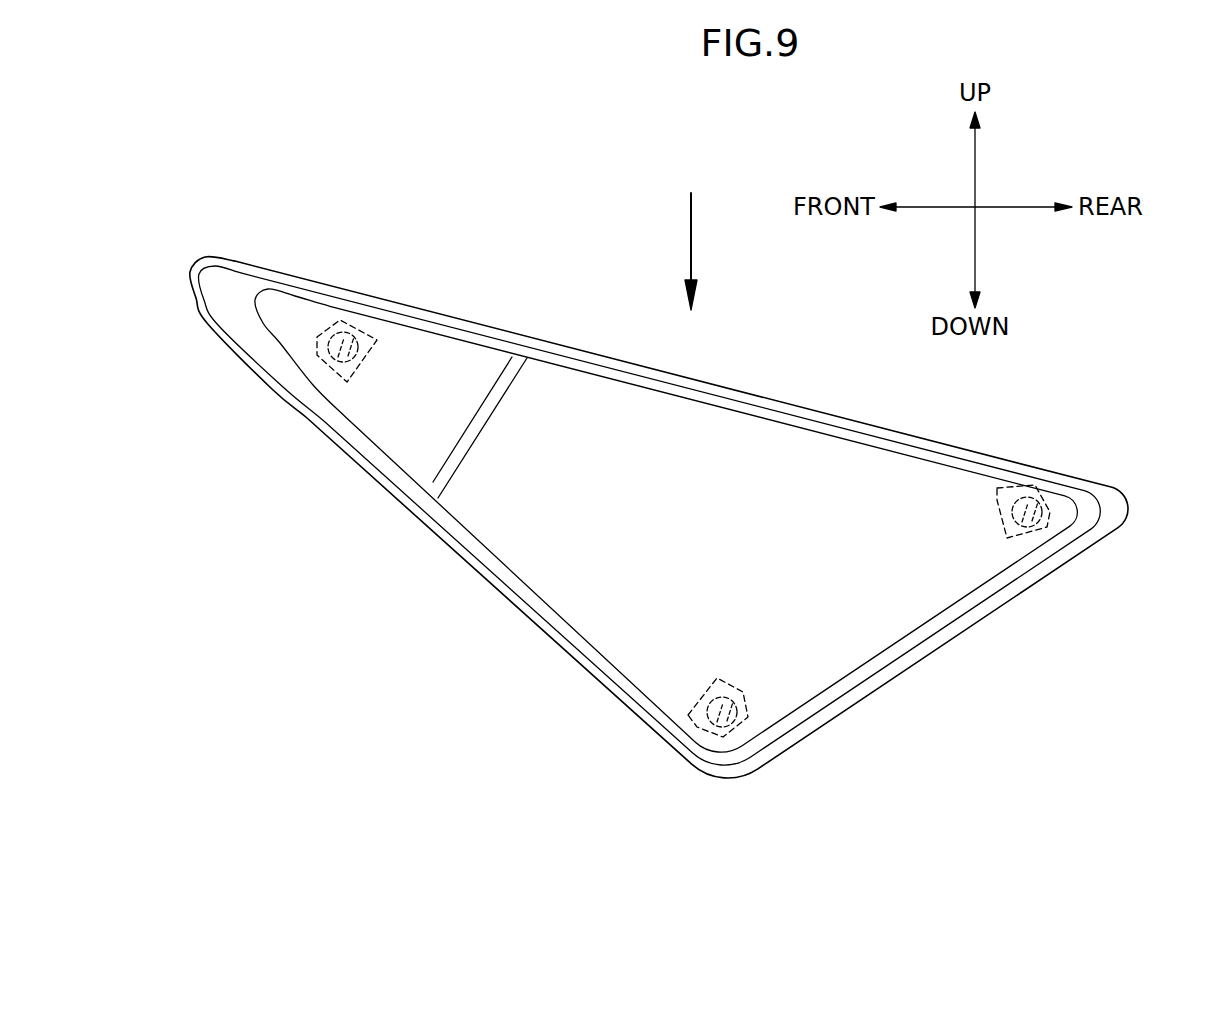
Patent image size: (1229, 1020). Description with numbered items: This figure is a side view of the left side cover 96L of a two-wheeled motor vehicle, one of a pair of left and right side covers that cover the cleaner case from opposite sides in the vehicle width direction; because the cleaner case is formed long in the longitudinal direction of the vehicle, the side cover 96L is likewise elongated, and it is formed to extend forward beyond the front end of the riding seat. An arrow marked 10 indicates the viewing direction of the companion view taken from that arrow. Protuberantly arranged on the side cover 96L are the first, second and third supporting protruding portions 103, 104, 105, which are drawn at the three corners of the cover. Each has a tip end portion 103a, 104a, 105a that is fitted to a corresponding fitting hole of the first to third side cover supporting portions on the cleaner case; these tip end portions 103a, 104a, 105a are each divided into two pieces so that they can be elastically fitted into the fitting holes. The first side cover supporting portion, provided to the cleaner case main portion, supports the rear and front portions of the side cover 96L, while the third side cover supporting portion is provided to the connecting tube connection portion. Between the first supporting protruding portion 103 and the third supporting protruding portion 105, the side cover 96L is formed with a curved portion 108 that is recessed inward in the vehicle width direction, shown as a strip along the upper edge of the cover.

The vehicle 10 is at (694, 229).
The left side cover 96L is at (518, 544).
The first supporting protruding portion 103 is at (1020, 485).
The tip end portion of first supporting protruding portion 103a is at (1040, 508).
The second supporting protruding portion 104 is at (750, 713).
The tip end portion of second supporting protruding portion 104a is at (717, 698).
The third supporting protruding portion 105 is at (327, 368).
The tip end portion of third supporting protruding portion 105a is at (323, 330).
The curved portion 108 is at (485, 427).